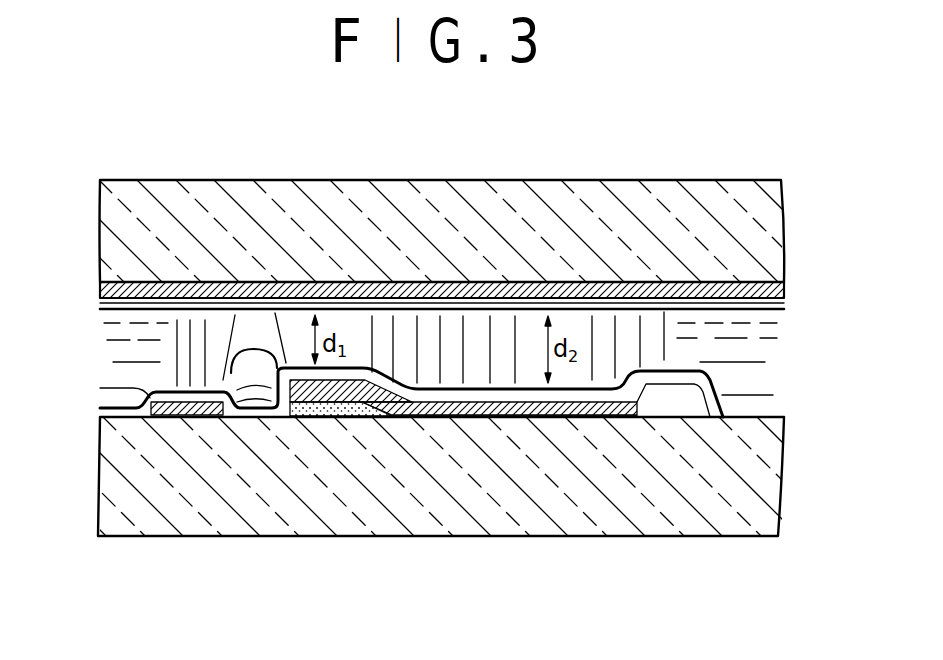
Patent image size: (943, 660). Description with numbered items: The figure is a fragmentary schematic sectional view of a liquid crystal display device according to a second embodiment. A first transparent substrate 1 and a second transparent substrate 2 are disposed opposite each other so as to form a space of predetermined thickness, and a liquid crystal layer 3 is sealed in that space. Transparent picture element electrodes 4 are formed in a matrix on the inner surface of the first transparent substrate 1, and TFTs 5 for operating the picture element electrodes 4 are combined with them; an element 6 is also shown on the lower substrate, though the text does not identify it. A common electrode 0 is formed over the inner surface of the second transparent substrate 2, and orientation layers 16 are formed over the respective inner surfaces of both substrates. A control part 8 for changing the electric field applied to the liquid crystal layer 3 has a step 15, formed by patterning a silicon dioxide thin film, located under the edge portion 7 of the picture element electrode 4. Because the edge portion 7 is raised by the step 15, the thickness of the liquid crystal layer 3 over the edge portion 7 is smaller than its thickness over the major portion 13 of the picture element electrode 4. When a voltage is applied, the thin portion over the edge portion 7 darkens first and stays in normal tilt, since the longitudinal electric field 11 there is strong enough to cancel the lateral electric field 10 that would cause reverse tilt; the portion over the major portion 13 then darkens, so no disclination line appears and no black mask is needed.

The first transparent substrate 1 is at (763, 488).
The second transparent substrate 2 is at (760, 238).
The common electrode 0 is at (778, 288).
The liquid crystal layer 3 is at (755, 355).
The picture element electrode 4 is at (603, 417).
The TFT 5 is at (690, 405).
The gate electrode 6 is at (180, 417).
The edge portion 7 is at (358, 377).
The control part 8 is at (322, 419).
The lateral electric field 10 is at (255, 335).
The longitudinal electric field 11 is at (467, 355).
The major portion 13 is at (542, 417).
The step 15 is at (352, 417).
The orientation layer 16 is at (120, 314).